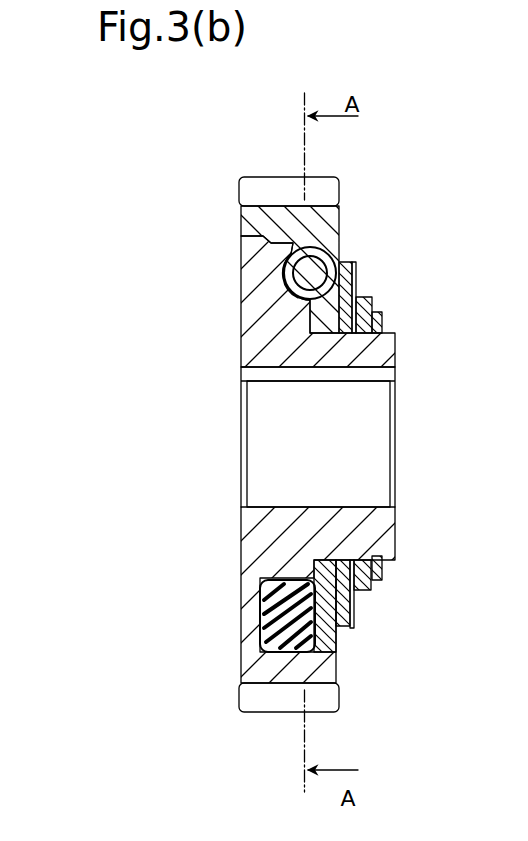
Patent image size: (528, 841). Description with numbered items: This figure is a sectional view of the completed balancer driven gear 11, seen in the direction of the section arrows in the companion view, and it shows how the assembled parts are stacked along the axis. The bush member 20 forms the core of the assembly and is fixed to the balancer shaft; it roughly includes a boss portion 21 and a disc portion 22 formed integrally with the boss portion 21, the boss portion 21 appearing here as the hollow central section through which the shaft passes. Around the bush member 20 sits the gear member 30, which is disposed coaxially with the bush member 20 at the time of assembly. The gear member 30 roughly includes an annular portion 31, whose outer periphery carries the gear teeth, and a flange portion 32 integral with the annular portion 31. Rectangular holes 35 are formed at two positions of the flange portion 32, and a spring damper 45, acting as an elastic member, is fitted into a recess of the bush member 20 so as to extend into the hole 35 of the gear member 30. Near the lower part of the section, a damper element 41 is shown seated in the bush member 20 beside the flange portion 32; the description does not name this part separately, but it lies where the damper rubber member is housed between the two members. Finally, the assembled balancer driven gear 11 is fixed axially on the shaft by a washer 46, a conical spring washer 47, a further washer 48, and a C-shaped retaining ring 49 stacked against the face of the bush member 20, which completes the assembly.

The balancer driven gear 11 is at (458, 146).
The bush member 20 is at (255, 383).
The boss portion 21 is at (313, 530).
The disc portion 22 is at (248, 627).
The gear member 30 is at (347, 225).
The annular portion 31 is at (263, 215).
The flange portion 32 is at (328, 610).
The rectangular hole 35 is at (313, 244).
The seal 41 is at (288, 633).
The spring damper 45 is at (288, 276).
The washer 46 is at (347, 630).
The conical spring washer 47 is at (355, 610).
The washer 48 is at (357, 585).
The C-shaped retaining ring 49 is at (383, 575).